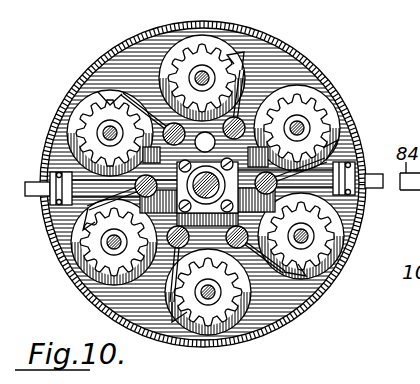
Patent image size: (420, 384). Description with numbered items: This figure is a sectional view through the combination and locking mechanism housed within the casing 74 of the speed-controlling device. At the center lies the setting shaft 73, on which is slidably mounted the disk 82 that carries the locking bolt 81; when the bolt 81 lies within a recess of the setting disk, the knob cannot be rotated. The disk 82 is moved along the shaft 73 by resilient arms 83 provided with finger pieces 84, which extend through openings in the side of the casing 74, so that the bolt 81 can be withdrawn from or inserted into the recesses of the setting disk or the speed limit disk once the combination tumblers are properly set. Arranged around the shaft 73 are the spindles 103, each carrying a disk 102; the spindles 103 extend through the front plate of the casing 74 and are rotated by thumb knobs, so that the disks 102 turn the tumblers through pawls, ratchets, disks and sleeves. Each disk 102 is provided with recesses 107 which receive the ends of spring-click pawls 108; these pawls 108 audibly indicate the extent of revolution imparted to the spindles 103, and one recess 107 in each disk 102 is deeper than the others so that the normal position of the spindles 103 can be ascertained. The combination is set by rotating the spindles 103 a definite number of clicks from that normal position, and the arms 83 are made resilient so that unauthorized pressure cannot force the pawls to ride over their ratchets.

The casing 74 is at (111, 62).
The locking bolt 81 is at (158, 95).
The finger pieces 84 is at (33, 182).
The spindles 103 is at (298, 121).
The disks 102 is at (313, 93).
The setting shaft 73 is at (225, 183).
The disk 82 is at (210, 214).
The spring-click pawls 108 is at (170, 258).
The recesses 107 is at (236, 334).
The resilient arms 83 is at (363, 212).